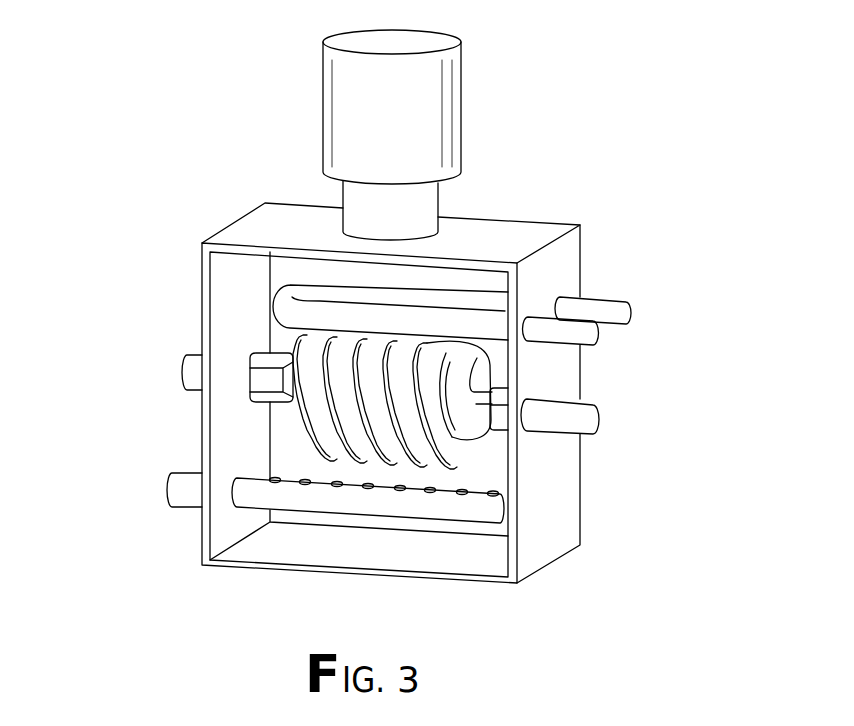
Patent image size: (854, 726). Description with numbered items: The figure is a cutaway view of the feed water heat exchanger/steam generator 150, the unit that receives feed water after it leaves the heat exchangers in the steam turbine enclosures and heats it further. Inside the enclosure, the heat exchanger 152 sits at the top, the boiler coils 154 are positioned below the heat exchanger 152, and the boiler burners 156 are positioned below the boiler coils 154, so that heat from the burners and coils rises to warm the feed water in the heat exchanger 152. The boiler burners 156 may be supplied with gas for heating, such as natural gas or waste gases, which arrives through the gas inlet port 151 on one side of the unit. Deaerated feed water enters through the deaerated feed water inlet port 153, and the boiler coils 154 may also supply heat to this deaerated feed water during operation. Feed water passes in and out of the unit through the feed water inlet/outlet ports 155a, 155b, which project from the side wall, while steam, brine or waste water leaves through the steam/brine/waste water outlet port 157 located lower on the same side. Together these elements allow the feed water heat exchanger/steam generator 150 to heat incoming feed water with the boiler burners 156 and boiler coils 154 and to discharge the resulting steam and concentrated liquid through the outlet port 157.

The feed water heat exchanger/steam generator 150 is at (539, 203).
The gas inlet port 151 is at (167, 490).
The heat exchanger 152 is at (490, 302).
The deaerated feed water inlet port 153 is at (182, 372).
The boiler coils 154 is at (305, 350).
The feed water inlet/outlet port 155a is at (630, 311).
The feed water inlet/outlet port 155b is at (598, 337).
The boiler burners 156 is at (447, 513).
The steam/brine/waste water outlet port 157 is at (600, 414).